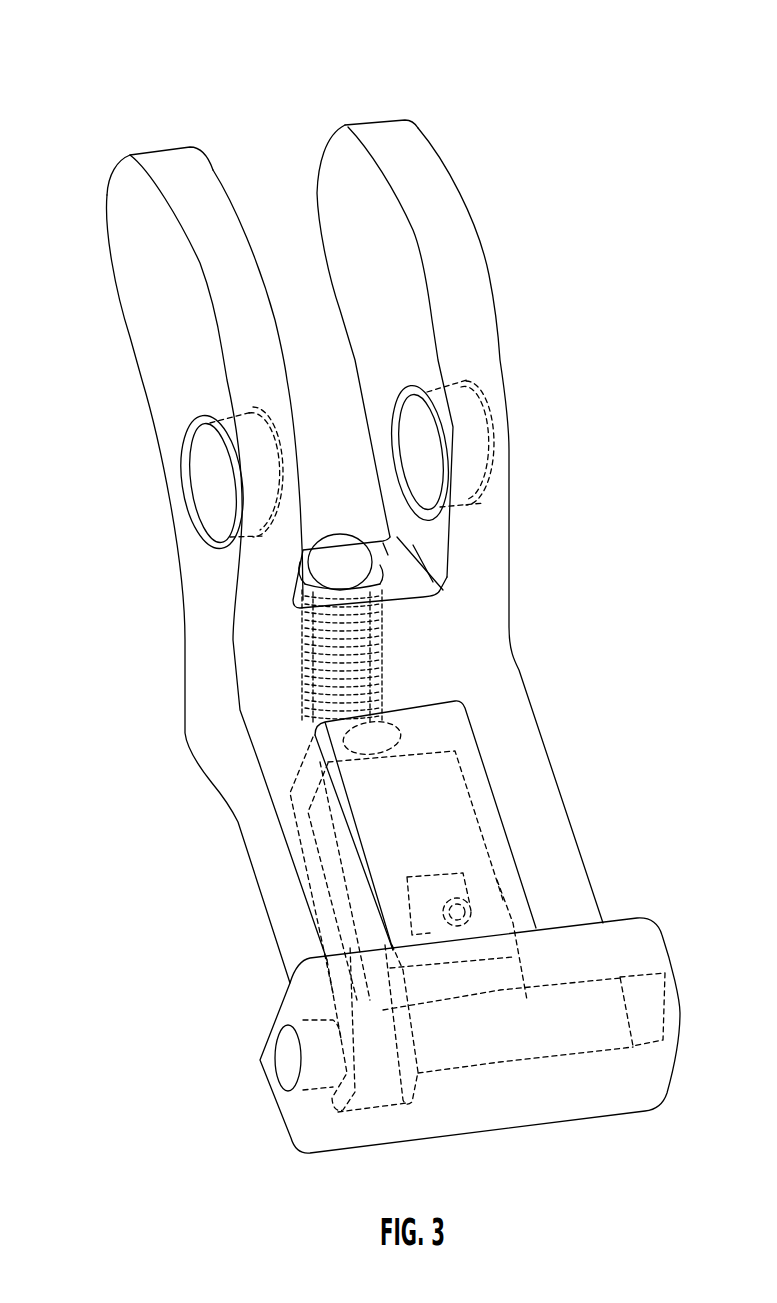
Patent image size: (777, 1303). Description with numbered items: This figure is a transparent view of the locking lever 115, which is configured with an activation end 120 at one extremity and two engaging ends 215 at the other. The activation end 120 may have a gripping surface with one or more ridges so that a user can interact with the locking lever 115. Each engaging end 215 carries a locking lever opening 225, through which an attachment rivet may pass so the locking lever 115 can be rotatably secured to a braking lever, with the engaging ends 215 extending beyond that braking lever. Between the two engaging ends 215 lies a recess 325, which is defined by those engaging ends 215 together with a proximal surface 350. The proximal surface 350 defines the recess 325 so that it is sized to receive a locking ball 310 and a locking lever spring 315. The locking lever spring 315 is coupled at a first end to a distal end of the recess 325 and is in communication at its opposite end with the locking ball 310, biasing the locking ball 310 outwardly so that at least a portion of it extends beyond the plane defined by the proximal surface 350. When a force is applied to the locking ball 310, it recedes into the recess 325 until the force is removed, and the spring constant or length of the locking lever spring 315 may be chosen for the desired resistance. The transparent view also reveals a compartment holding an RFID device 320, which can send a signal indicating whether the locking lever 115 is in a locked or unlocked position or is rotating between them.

The locking lever 115 is at (146, 41).
The engaging end 215 is at (153, 150).
The locking lever opening 225 is at (207, 478).
The recess 325 is at (308, 265).
The proximal surface 350 is at (387, 553).
The locking ball 310 is at (333, 560).
The locking lever spring 315 is at (310, 666).
The RFID device 320 is at (357, 800).
The activation end 120 is at (497, 1127).